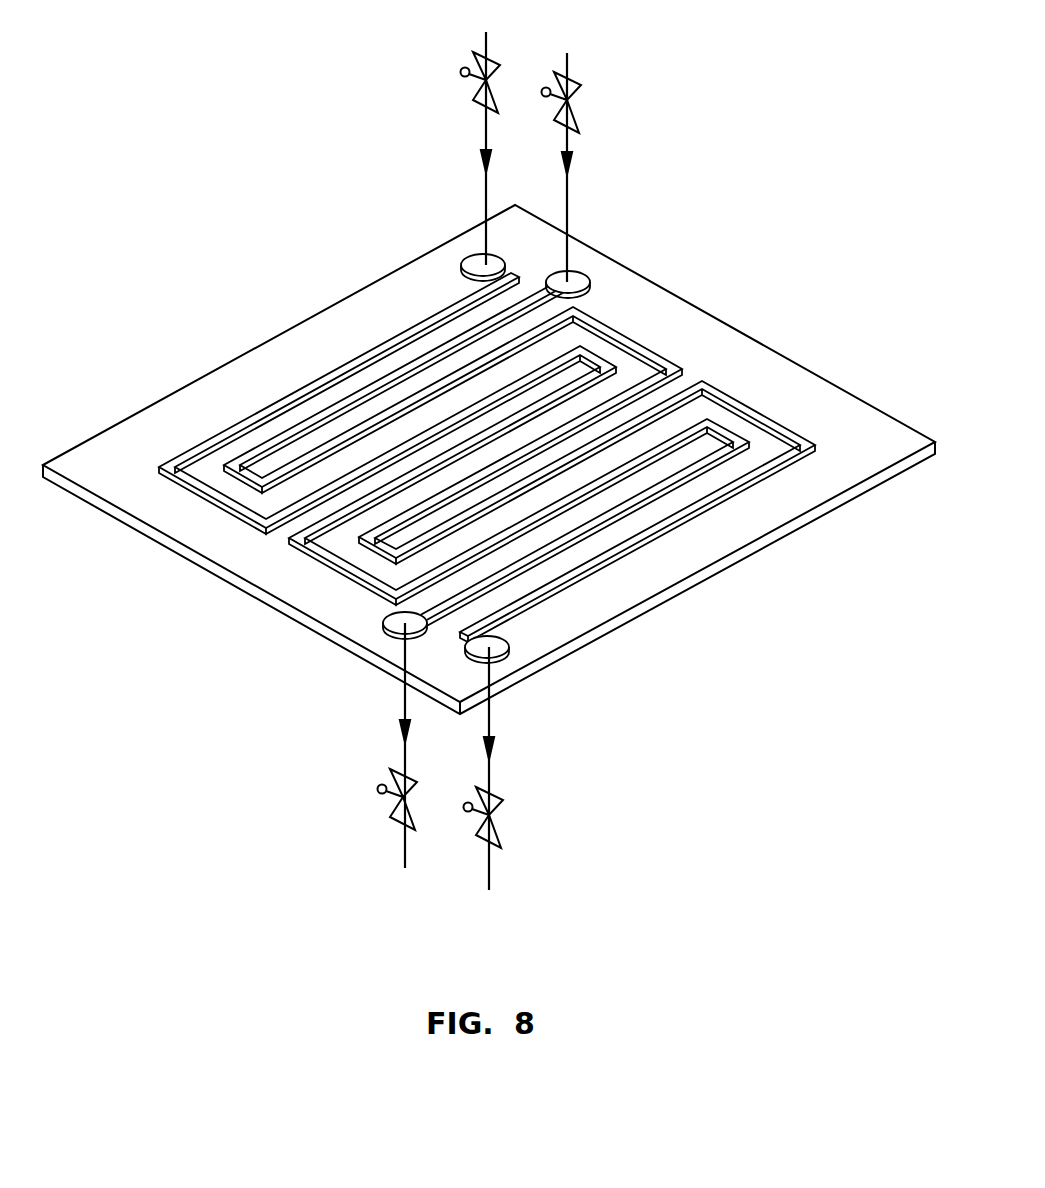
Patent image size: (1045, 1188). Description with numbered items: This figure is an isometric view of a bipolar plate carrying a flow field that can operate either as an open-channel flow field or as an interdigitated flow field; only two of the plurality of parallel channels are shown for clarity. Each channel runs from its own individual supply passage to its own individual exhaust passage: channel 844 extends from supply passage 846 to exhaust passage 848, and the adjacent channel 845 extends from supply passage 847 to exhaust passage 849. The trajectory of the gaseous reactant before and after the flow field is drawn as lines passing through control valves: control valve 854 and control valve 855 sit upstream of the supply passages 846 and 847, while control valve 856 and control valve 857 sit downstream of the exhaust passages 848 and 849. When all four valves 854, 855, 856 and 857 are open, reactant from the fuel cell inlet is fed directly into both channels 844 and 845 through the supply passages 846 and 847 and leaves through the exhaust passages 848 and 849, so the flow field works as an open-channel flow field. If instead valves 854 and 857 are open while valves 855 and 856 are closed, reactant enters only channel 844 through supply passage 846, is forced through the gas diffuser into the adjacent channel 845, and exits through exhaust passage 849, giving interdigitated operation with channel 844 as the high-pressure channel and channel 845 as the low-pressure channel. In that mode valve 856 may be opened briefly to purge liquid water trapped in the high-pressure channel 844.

The channel 844 is at (400, 338).
The channel 845 is at (305, 432).
The supply passage 846 is at (470, 254).
The supply passage 847 is at (590, 283).
The exhaust passage 848 is at (400, 630).
The exhaust passage 849 is at (505, 650).
The control valve 854 is at (484, 92).
The control valve 855 is at (569, 120).
The control valve 856 is at (392, 826).
The control valve 857 is at (496, 840).